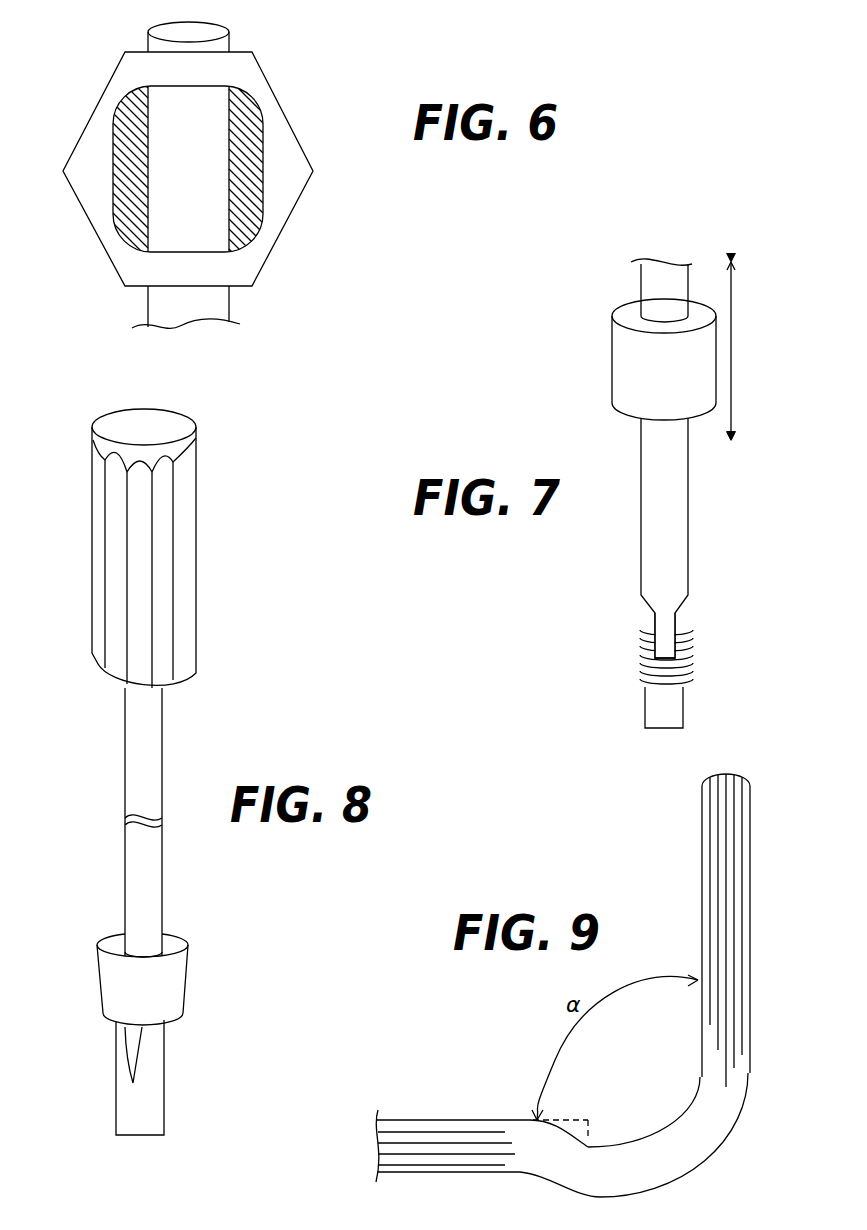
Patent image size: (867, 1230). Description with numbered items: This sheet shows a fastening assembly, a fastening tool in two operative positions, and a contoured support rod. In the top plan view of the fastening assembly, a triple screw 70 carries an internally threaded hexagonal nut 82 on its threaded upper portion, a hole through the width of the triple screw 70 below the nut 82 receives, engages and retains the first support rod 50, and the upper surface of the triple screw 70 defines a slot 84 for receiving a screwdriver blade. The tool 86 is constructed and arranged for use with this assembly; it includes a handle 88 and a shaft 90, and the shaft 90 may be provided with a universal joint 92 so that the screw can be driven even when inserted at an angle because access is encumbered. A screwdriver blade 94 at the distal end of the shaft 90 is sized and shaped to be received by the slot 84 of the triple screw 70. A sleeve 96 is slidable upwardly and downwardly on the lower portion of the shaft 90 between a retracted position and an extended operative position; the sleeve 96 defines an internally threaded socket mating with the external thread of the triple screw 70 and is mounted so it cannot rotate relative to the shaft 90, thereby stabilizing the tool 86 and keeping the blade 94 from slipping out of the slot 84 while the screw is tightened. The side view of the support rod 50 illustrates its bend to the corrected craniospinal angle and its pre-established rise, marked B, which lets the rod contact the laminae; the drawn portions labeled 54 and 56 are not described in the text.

In FIG. 9, the first support rod 50 is at (673, 974).
In FIG. 6, the tube proximal segment 54 is at (195, 306).
In FIG. 9, the tube proximal segment 54 is at (393, 1180).
In FIG. 9, the tube distal segment 56 is at (748, 818).
In FIG. 6, the triple screw 70 is at (137, 130).
In FIG. 7, the triple screw 70 is at (659, 714).
In FIG. 8, the triple screw 70 is at (115, 1118).
In FIG. 6, the hexagonal nut 82 is at (277, 157).
In FIG. 6, the slot 84 is at (182, 197).
In FIG. 8, the tool 86 is at (240, 680).
In FIG. 8, the handle 88 is at (183, 552).
In FIG. 7, the shaft 90 is at (675, 511).
In FIG. 8, the shaft 90 is at (130, 752).
In FIG. 8, the universal joint 92 is at (133, 868).
In FIG. 7, the screwdriver blade 94 is at (670, 617).
In FIG. 8, the screwdriver blade 94 is at (133, 1082).
In FIG. 7, the sleeve 96 is at (638, 377).
In FIG. 8, the sleeve 96 is at (165, 990).
In FIG. 9, the bend B is at (582, 1125).